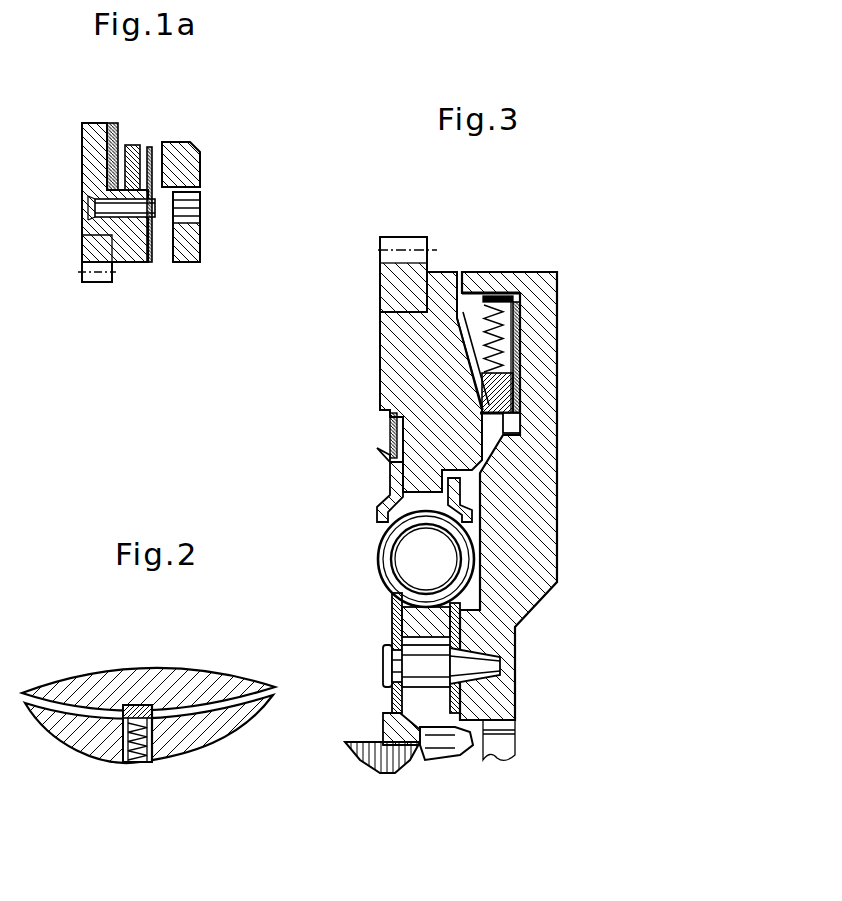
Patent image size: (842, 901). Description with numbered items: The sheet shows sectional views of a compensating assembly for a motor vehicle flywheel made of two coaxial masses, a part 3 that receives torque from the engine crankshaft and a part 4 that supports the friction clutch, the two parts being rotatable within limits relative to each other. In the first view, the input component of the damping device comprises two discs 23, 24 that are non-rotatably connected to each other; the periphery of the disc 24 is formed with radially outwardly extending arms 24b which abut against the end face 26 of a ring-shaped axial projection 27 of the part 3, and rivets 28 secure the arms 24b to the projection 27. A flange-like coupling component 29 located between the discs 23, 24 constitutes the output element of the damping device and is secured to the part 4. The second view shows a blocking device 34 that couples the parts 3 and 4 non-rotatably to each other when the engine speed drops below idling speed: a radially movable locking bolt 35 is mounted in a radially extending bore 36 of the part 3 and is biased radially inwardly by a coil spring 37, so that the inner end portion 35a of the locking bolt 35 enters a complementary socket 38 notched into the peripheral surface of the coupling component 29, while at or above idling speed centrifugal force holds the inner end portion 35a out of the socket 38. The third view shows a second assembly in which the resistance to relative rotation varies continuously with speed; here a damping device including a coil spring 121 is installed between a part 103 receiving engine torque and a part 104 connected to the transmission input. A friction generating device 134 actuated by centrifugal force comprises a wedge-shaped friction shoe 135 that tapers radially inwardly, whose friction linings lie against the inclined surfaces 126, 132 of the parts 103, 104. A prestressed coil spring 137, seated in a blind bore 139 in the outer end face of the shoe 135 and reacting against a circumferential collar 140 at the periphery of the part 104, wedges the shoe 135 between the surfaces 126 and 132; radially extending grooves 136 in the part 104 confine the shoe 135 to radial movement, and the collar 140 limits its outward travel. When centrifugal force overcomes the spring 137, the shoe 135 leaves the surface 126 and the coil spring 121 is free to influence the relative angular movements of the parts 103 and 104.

In FIG. 1a, the part 3 is at (87, 127).
In FIG. 2, the part 3 is at (257, 725).
In FIG. 1a, the part 4 is at (188, 160).
In FIG. 1a, the disc 23 is at (113, 125).
In FIG. 1a, the disc 24 is at (150, 147).
In FIG. 1a, the arms 24b is at (148, 262).
In FIG. 1a, the end face 26 is at (122, 248).
In FIG. 1a, the axial projection 27 is at (100, 270).
In FIG. 1a, the rivets 28 is at (100, 203).
In FIG. 1a, the coupling component 29 is at (130, 147).
In FIG. 2, the coupling component 29 is at (108, 682).
In FIG. 2, the blocking device 34 is at (115, 790).
In FIG. 2, the locking bolt 35 is at (110, 760).
In FIG. 2, the inner end portion 35a is at (135, 713).
In FIG. 2, the radially extending bore 36 is at (153, 745).
In FIG. 2, the coil spring 37 is at (137, 763).
In FIG. 2, the socket 38 is at (149, 705).
In FIG. 3, the part 103 is at (400, 333).
In FIG. 3, the part 104 is at (540, 283).
In FIG. 3, the coil spring 121 is at (463, 553).
In FIG. 3, the surface 126 is at (457, 342).
In FIG. 3, the surface 132 is at (520, 383).
In FIG. 3, the friction generating device 134 is at (507, 222).
In FIG. 3, the friction shoe 135 is at (400, 428).
In FIG. 3, the radially extending grooves 136 is at (512, 425).
In FIG. 3, the coil spring 137 is at (497, 305).
In FIG. 3, the blind bore 139 is at (500, 348).
In FIG. 3, the collar 140 is at (490, 283).